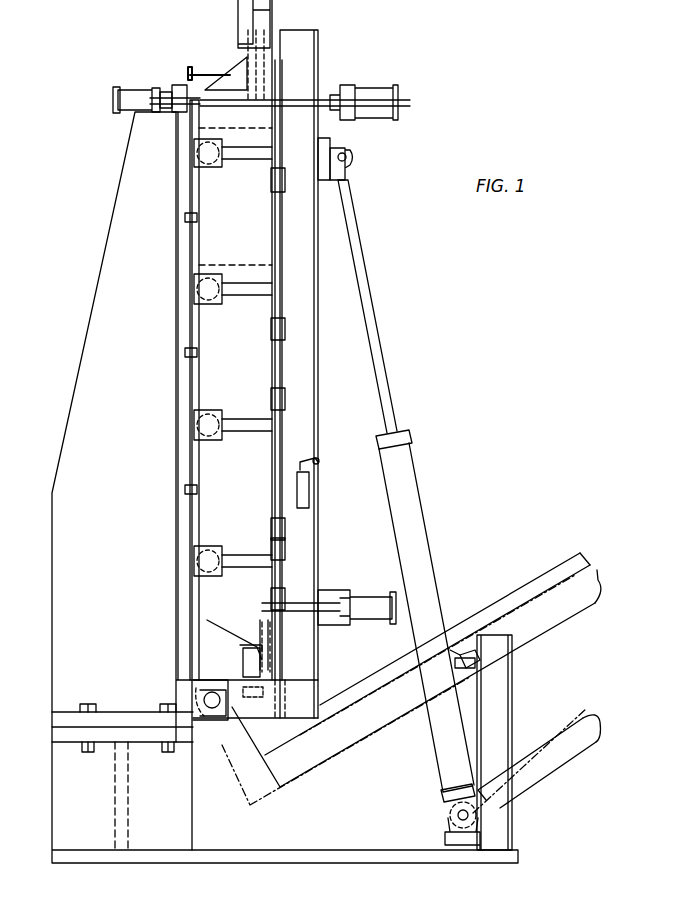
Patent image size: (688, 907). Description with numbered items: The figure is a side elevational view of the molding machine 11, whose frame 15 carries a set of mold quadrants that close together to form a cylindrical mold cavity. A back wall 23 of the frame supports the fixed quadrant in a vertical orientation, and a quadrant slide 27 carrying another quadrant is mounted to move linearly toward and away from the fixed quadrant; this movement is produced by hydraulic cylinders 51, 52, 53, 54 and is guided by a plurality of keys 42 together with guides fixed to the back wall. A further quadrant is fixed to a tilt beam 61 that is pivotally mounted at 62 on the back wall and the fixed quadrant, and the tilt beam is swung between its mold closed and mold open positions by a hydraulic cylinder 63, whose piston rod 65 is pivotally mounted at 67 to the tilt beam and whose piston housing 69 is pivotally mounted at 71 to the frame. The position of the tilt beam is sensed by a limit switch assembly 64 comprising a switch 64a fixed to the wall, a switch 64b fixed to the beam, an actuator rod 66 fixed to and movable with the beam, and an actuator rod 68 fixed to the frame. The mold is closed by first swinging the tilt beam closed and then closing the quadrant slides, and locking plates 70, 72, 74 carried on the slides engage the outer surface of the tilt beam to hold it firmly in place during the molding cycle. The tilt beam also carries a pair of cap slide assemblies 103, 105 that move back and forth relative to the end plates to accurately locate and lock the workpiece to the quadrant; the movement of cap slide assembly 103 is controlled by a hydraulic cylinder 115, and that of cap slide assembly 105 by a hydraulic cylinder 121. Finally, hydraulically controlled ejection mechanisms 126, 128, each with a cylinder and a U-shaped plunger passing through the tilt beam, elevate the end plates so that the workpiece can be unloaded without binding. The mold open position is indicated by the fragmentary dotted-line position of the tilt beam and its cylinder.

The molding machine 11 is at (361, 66).
The frame 15 is at (130, 366).
The back wall 23 is at (176, 200).
The quadrant slide 27 is at (244, 198).
The keys 42 is at (185, 218).
The hydraulic cylinder 51 is at (212, 140).
The hydraulic cylinder 52 is at (212, 275).
The hydraulic cylinder 53 is at (212, 411).
The hydraulic cylinder 54 is at (212, 547).
The tilt beam 61 is at (300, 297).
The pivot mounting 62 is at (211, 710).
The hydraulic cylinder 63 is at (416, 466).
The limit switch assembly 64 is at (115, 92).
The switch 64a is at (172, 88).
The switch 64b is at (462, 654).
The piston rod 65 is at (373, 338).
The actuator rod 66 is at (188, 70).
The pivot mounting 67 is at (352, 156).
The actuator rod 68 is at (477, 670).
The piston housing 69 is at (412, 536).
The locking plate 70 is at (285, 152).
The pivot mounting 71 is at (456, 813).
The locking plate 72 is at (286, 352).
The locking plate 74 is at (292, 560).
The cap slide assembly 103 is at (232, 638).
The cap slide assembly 105 is at (228, 70).
The hydraulic cylinder 115 is at (243, 664).
The hydraulic cylinder 121 is at (238, 19).
The ejection mechanism 126 is at (372, 592).
The ejection mechanism 128 is at (400, 104).